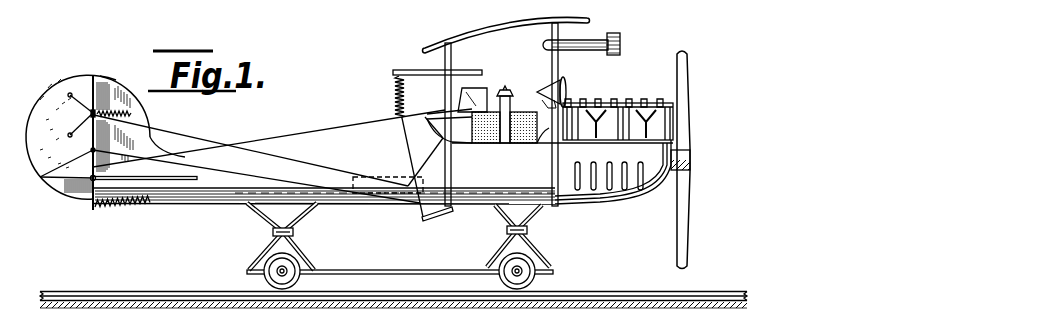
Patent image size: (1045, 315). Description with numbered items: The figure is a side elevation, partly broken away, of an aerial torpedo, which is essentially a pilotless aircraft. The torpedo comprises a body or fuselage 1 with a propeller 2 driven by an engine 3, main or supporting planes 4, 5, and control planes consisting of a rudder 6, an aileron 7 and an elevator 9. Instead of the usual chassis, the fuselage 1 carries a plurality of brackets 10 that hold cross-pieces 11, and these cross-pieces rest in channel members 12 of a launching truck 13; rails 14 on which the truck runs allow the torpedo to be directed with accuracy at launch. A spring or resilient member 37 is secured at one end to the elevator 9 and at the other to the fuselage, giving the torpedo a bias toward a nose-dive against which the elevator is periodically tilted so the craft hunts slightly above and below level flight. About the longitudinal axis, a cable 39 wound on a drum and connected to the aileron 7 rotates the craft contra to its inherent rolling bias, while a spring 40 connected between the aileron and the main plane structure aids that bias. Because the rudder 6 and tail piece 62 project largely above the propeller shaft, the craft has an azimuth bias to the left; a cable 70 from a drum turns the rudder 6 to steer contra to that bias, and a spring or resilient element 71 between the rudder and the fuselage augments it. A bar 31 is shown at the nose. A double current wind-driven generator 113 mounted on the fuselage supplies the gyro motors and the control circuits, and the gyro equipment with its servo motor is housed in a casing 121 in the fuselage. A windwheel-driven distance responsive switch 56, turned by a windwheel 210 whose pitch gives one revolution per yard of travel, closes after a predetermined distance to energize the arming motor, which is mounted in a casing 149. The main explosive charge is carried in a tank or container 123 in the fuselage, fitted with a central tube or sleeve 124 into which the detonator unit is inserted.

The body or fuselage 1 is at (324, 159).
The propeller 2 is at (689, 86).
The engine 3 is at (613, 105).
The main or supporting plane 4 is at (458, 37).
The main or supporting plane 5 is at (577, 201).
The rudder 6 is at (105, 142).
The aileron 7 is at (412, 70).
The elevator 9 is at (64, 185).
The bracket 10 is at (256, 212).
The cross-piece 11 is at (297, 231).
The channel member 12 is at (270, 239).
The launching truck 13 is at (353, 270).
The rails 14 is at (603, 290).
The horizontal bar 31 is at (218, 171).
The spring or resilient member 37 is at (122, 217).
The cable 39 is at (427, 169).
The spring or resilient means 40 is at (395, 105).
The windwheel-driven distance responsive switch 56 is at (593, 39).
The tail piece 62 is at (151, 44).
The cable 70 is at (203, 139).
The spring or resilient element 71 is at (133, 113).
The double current wind-driven generator 113 is at (539, 86).
The casing 121 is at (405, 181).
The tank or container 123 is at (543, 143).
The central tube or sleeve 124 is at (502, 144).
The casing 149 is at (480, 90).
The windwheel 210 is at (631, 48).